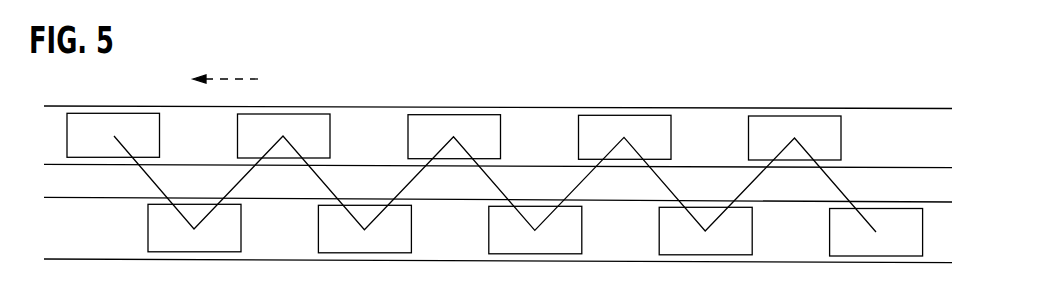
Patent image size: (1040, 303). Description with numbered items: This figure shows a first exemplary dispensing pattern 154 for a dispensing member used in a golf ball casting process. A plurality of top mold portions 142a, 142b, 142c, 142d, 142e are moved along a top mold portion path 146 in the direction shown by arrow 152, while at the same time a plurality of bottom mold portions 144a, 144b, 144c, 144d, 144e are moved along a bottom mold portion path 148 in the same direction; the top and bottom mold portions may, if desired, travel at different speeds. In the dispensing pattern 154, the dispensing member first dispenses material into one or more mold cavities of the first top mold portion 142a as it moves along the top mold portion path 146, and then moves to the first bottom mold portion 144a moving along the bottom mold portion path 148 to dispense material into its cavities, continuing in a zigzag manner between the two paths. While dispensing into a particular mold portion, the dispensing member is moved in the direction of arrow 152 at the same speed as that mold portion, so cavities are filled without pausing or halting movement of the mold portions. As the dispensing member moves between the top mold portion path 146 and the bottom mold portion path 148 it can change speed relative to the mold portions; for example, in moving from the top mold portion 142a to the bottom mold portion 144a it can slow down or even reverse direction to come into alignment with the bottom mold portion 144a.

The first top mold portion 142a is at (108, 113).
The top mold portion 142b is at (331, 121).
The top mold portion 142c is at (478, 115).
The top mold portion 142d is at (637, 115).
The top mold portion 142e is at (783, 115).
The first bottom mold portion 144a is at (210, 245).
The bottom mold portion 144b is at (366, 246).
The bottom mold portion 144c is at (542, 246).
The bottom mold portion 144d is at (714, 247).
The bottom mold portion 144e is at (876, 248).
The top mold portion path 146 is at (872, 108).
The bottom mold portion path 148 is at (942, 265).
The arrow 152 is at (245, 78).
The first exemplary dispensing pattern 154 is at (405, 187).